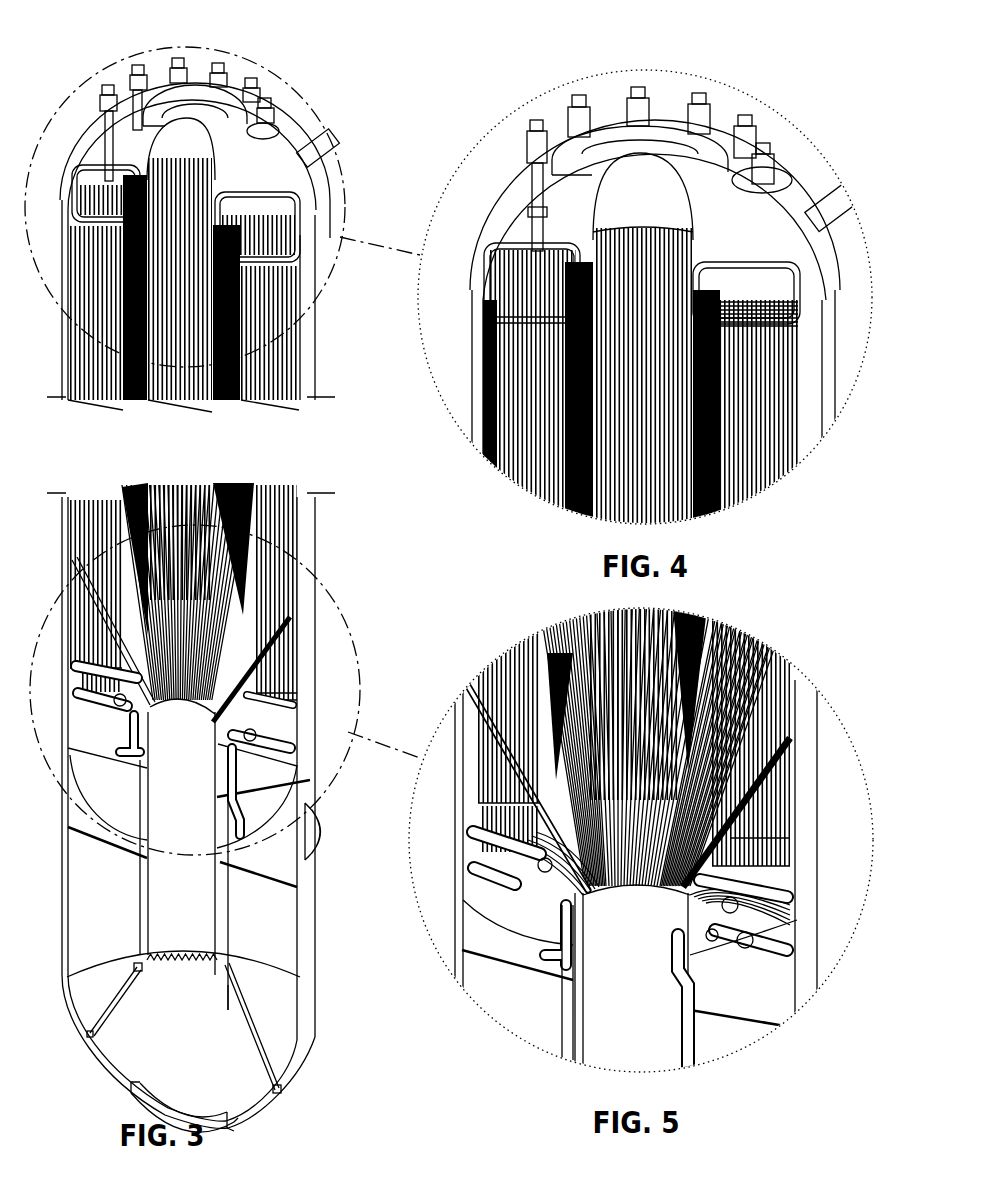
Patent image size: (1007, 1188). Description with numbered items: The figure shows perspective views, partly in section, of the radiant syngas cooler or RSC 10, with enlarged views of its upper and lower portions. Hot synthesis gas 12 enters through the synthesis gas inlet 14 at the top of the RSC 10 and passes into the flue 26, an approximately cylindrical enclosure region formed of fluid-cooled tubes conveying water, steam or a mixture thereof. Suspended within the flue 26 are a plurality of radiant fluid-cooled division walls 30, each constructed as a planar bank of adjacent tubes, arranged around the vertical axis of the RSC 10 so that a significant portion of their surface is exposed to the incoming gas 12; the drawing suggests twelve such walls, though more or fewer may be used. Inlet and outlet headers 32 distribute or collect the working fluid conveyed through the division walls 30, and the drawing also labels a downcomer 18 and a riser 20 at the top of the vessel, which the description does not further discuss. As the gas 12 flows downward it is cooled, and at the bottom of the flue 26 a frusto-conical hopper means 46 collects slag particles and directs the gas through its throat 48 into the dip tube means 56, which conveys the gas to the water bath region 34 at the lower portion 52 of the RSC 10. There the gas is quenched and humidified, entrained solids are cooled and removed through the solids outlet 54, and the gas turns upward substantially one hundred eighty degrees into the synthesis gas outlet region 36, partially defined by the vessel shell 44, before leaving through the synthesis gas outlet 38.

In FIG. 3, the radiant syngas cooler (RSC) 10 is at (285, 470).
In FIG. 4, the synthesis gas 12 is at (650, 223).
In FIG. 5, the synthesis gas 12 is at (637, 1035).
In FIG. 4, the synthesis gas inlet 14 is at (610, 113).
In FIG. 3, the downcomer 18 is at (302, 330).
In FIG. 4, the downcomer 18 is at (843, 197).
In FIG. 5, the downcomer 18 is at (755, 955).
In FIG. 4, the riser 20 is at (527, 113).
In FIG. 3, the flue 26 is at (193, 476).
In FIG. 4, the division walls 30 is at (758, 413).
In FIG. 5, the division walls 30 is at (523, 662).
In FIG. 4, the headers 32 is at (503, 228).
In FIG. 5, the headers 32 is at (480, 848).
In FIG. 3, the water bath region 34 is at (170, 1015).
In FIG. 3, the synthesis gas outlet region 36 is at (103, 796).
In FIG. 3, the synthesis gas outlet 38 is at (322, 818).
In FIG. 3, the vessel shell 44 is at (318, 595).
In FIG. 5, the vessel shell 44 is at (820, 732).
In FIG. 5, the hopper means 46 is at (545, 872).
In FIG. 5, the throat 48 is at (637, 931).
In FIG. 3, the lower portion 52 is at (316, 985).
In FIG. 3, the solids outlet 54 is at (245, 1123).
In FIG. 5, the dip tube means 56 is at (571, 1013).